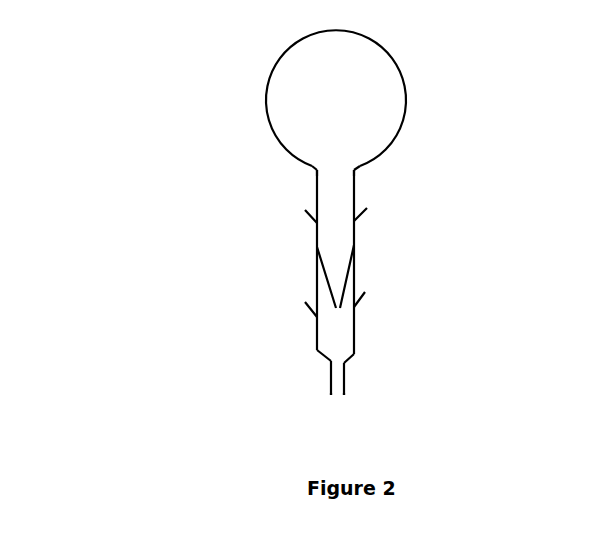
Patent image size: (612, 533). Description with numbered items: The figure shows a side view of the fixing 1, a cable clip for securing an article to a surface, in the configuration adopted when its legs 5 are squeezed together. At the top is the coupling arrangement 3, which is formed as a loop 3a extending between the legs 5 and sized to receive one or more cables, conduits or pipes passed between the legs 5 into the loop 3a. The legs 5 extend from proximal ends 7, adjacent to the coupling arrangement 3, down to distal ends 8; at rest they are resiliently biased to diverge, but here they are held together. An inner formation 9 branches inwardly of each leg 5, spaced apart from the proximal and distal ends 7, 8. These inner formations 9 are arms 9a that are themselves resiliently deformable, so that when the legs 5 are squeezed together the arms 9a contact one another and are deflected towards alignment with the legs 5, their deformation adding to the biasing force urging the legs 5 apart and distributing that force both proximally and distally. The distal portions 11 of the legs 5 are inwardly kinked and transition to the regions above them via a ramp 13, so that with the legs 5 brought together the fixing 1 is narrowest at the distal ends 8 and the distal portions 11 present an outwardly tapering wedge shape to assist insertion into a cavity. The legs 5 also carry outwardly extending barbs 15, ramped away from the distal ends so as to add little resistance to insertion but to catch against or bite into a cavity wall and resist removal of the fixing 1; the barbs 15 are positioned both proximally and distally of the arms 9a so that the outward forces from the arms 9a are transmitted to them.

The fixing 1 is at (132, 96).
The coupling arrangement 3 is at (395, 100).
The loop 3a is at (403, 60).
The legs 5 is at (305, 207).
The proximal ends 7 is at (322, 165).
The barbs 15 is at (367, 208).
The inner formation 9 is at (261, 285).
The arms 9a is at (320, 285).
The ramp 13 is at (325, 358).
The distal portions 11 is at (374, 350).
The distal ends 8 is at (333, 390).